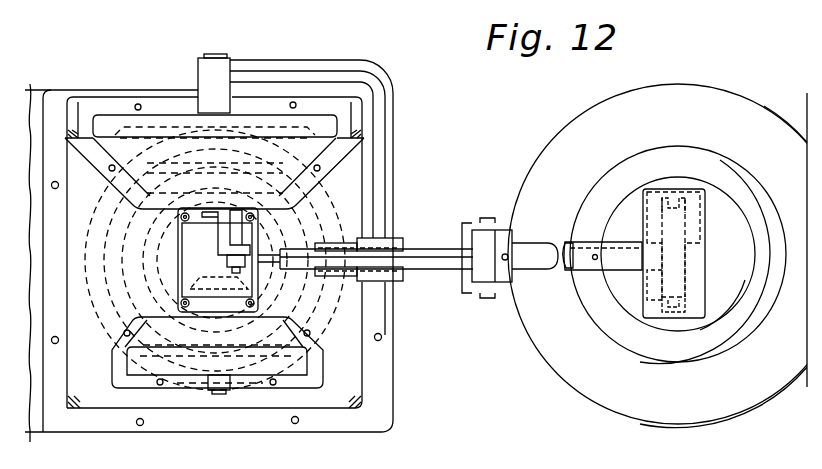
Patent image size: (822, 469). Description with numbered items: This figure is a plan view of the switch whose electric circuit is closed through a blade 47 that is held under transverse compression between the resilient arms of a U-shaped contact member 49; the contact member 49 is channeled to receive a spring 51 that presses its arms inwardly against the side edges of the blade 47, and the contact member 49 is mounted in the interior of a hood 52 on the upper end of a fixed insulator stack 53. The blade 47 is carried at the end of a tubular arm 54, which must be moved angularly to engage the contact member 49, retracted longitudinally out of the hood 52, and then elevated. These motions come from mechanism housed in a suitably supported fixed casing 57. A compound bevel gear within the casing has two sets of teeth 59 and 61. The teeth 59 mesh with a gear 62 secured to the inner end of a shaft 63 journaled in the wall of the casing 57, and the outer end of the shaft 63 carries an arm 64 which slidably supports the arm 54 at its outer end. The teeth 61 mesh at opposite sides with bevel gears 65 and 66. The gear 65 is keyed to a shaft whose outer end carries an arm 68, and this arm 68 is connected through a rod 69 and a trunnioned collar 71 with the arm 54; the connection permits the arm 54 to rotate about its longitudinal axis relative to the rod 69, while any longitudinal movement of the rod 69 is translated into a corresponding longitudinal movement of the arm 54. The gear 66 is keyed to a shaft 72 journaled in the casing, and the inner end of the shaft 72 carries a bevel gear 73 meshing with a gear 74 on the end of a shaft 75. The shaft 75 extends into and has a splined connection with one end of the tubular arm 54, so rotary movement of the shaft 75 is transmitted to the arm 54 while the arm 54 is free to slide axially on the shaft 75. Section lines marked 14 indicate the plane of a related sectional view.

The section line of FIG. 14 is at (215, 87).
The blade 47 is at (648, 275).
The U-shaped contact member 49 is at (688, 275).
The spring 51 is at (672, 307).
The hood 52 is at (703, 213).
The fixed insulator stack 53 is at (738, 398).
The arm 54 is at (588, 243).
The fixed casing 57 is at (60, 92).
The teeth 59 is at (106, 322).
The teeth 61 is at (120, 301).
The gear 62 is at (160, 124).
The shaft 63 is at (208, 57).
The arm 64 is at (395, 116).
The bevel gear 65 is at (113, 197).
The bevel gear 66 is at (323, 368).
The arm 68 is at (228, 227).
The rod 69 is at (410, 257).
The trunnioned collar 71 is at (483, 230).
The shaft 72 is at (217, 393).
The bevel gear 73 is at (197, 284).
The gear 74 is at (330, 337).
The shaft 75 is at (292, 248).